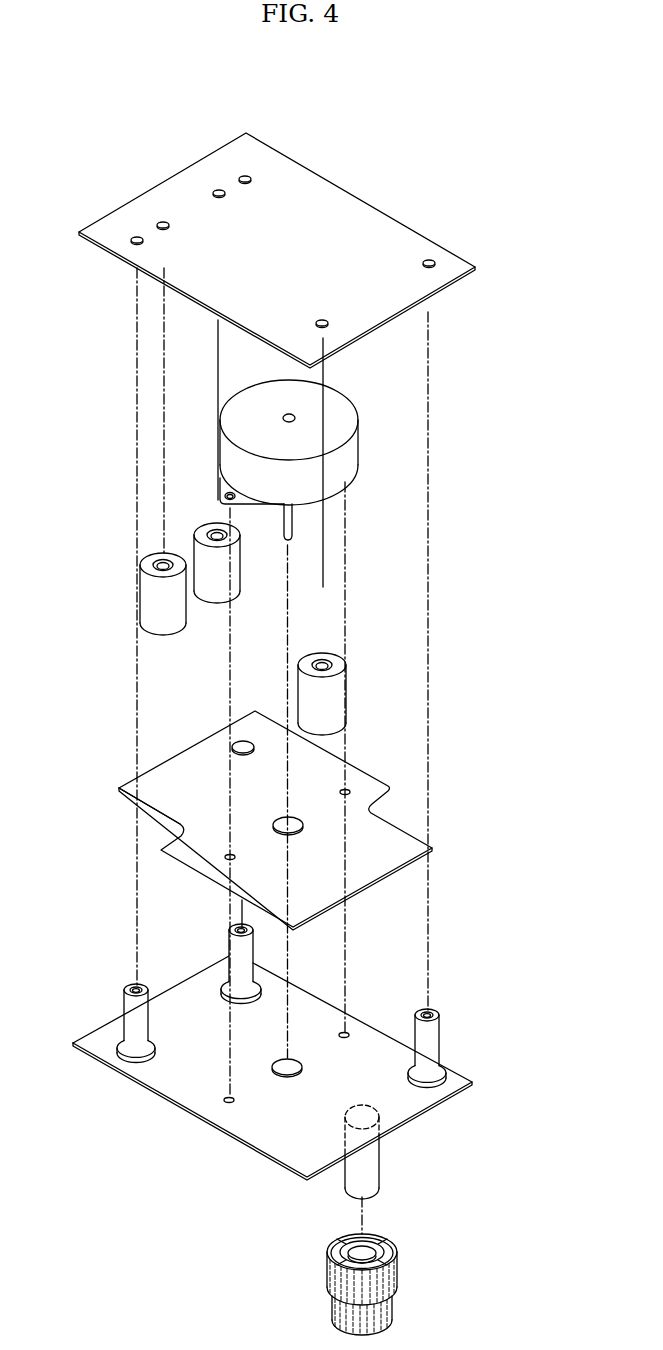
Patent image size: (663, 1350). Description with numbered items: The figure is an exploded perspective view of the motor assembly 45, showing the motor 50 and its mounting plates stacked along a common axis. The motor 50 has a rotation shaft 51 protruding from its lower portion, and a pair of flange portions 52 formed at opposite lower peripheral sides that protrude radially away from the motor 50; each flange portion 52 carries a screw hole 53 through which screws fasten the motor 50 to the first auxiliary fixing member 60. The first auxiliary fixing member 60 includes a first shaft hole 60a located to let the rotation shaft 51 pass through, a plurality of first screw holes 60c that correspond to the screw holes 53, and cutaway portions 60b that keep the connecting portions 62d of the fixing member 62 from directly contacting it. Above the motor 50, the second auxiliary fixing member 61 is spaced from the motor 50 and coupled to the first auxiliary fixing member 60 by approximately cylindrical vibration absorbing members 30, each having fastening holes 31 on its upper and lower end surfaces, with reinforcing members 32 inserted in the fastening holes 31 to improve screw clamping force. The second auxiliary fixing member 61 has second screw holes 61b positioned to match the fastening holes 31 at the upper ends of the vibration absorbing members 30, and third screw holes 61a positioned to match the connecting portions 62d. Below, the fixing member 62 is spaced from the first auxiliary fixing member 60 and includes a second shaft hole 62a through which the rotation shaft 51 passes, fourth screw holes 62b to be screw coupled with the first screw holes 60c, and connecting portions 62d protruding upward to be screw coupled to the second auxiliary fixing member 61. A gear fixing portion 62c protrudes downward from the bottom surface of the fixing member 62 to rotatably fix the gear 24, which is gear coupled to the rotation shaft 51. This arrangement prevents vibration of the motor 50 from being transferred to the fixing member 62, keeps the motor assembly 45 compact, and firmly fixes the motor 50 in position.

The gear 24 is at (388, 1275).
The vibration absorbing member 30 is at (135, 580).
The fastening hole 31 is at (158, 563).
The reinforcing member 32 is at (157, 566).
The motor assembly 45 is at (561, 545).
The motor 50 is at (328, 460).
The rotation shaft 51 is at (293, 520).
The flange portion 52 is at (224, 497).
The screw hole 53 is at (231, 470).
The first auxiliary fixing member 60 is at (257, 813).
The first shaft hole 60a is at (288, 817).
The cutaway portion 60b is at (152, 813).
The first screw hole 60c is at (227, 856).
The second auxiliary fixing member 61 is at (336, 202).
The third screw hole 61a is at (242, 177).
The second screw hole 61b is at (170, 225).
The fixing member 62 is at (260, 1063).
The second shaft hole 62a is at (287, 1060).
The fourth screw hole 62b is at (227, 1100).
The gear fixing portion 62c is at (369, 1168).
The connecting portion 62d is at (130, 1005).